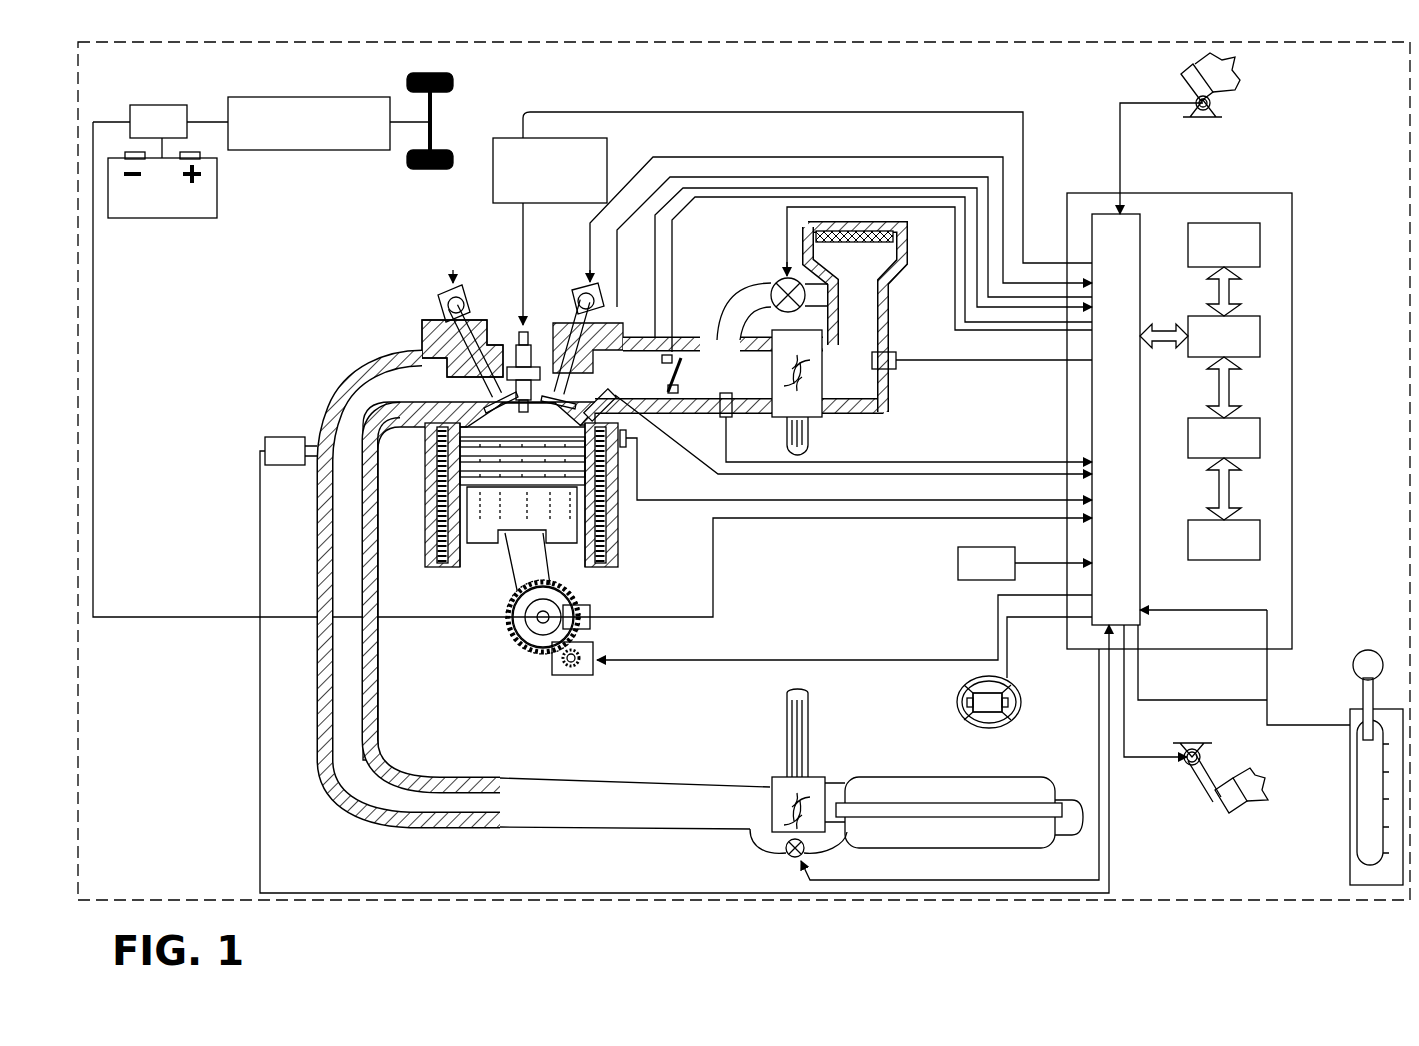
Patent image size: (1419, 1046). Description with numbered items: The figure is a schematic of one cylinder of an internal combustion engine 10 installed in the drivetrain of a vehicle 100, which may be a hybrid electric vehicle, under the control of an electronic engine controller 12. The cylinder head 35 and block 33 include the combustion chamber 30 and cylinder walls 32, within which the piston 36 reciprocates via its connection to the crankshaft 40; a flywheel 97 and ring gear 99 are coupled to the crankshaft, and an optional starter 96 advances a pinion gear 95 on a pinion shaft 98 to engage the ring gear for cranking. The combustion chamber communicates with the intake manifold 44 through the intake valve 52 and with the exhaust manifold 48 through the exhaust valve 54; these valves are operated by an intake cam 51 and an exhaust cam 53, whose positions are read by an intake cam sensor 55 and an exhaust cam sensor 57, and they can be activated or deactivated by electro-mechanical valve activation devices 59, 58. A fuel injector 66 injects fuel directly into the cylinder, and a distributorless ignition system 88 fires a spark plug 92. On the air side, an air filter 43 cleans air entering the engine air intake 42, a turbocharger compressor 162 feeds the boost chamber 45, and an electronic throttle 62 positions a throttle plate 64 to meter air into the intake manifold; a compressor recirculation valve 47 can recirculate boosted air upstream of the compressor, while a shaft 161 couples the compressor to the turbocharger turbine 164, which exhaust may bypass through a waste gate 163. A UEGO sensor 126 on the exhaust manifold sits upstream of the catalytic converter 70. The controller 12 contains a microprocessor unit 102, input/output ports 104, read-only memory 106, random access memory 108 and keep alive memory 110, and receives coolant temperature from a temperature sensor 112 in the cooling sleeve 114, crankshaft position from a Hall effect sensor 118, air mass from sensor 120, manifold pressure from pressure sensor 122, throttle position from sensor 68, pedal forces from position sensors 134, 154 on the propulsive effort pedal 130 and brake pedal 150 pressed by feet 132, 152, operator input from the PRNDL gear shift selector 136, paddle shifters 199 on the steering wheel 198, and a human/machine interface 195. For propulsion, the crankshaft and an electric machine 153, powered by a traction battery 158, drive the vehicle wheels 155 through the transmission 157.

The internal combustion engine 10 is at (358, 270).
The electronic engine controller 12 is at (1292, 200).
The combustion chamber 30 is at (430, 525).
The cylinder walls 32 is at (462, 530).
The block 33 is at (420, 463).
The cylinder head 35 is at (418, 315).
The piston 36 is at (510, 522).
The crankshaft 40 is at (530, 645).
The engine air intake 42 is at (745, 258).
The air filter 43 is at (862, 243).
The intake manifold 44 is at (660, 367).
The boost chamber 45 is at (739, 383).
The compressor recirculation valve 47 is at (778, 280).
The exhaust manifold 48 is at (547, 593).
The intake cam 51 is at (580, 292).
The intake valve 52 is at (568, 398).
The exhaust cam 53 is at (458, 292).
The exhaust valve 54 is at (473, 397).
The intake cam sensor 55 is at (604, 306).
The exhaust cam sensor 57 is at (445, 300).
The valve activation device 58 is at (466, 303).
The valve activation device 59 is at (582, 314).
The electronic throttle 62 is at (681, 373).
The throttle plate 64 is at (682, 384).
The fuel injector 66 is at (630, 430).
The throttle position sensor 68 is at (620, 346).
The catalytic converter 70 is at (890, 777).
The distributorless ignition system 88 is at (605, 140).
The spark plug 92 is at (526, 330).
The pinion gear 95 is at (580, 668).
The starter 96 is at (593, 672).
The flywheel 97 is at (512, 625).
The pinion shaft 98 is at (563, 668).
The ring gear 99 is at (535, 652).
The vehicle 100 is at (78, 655).
The microprocessor unit 102 is at (1262, 340).
The input/output ports 104 is at (1145, 232).
The read-only memory 106 is at (1262, 240).
The random access memory 108 is at (1262, 440).
The keep alive memory 110 is at (1262, 542).
The temperature sensor 112 is at (634, 448).
The cooling sleeve 114 is at (615, 522).
The Hall effect sensor 118 is at (590, 610).
The air mass sensor 120 is at (897, 355).
The pressure sensor 122 is at (720, 413).
The Universal Exhaust Gas Oxygen sensor 126 is at (265, 445).
The propulsive effort pedal 130 is at (1183, 82).
The foot 132 is at (1235, 80).
The position sensor 134 is at (1222, 108).
The gear shift selector 136 is at (1356, 697).
The brake pedal 150 is at (1216, 800).
The foot 152 is at (1252, 775).
The electric machine 153 is at (172, 105).
The position sensor 154 is at (1184, 757).
The vehicle wheels 155 is at (452, 92).
The transmission 157 is at (325, 150).
The traction battery 158 is at (157, 218).
The shaft 161 is at (786, 438).
The turbocharger compressor 162 is at (808, 402).
The waste gate 163 is at (789, 858).
The turbocharger turbine 164 is at (773, 778).
The human/machine interface 195 is at (1025, 563).
The steering wheel 198 is at (957, 703).
The paddle shifters 199 is at (1002, 705).